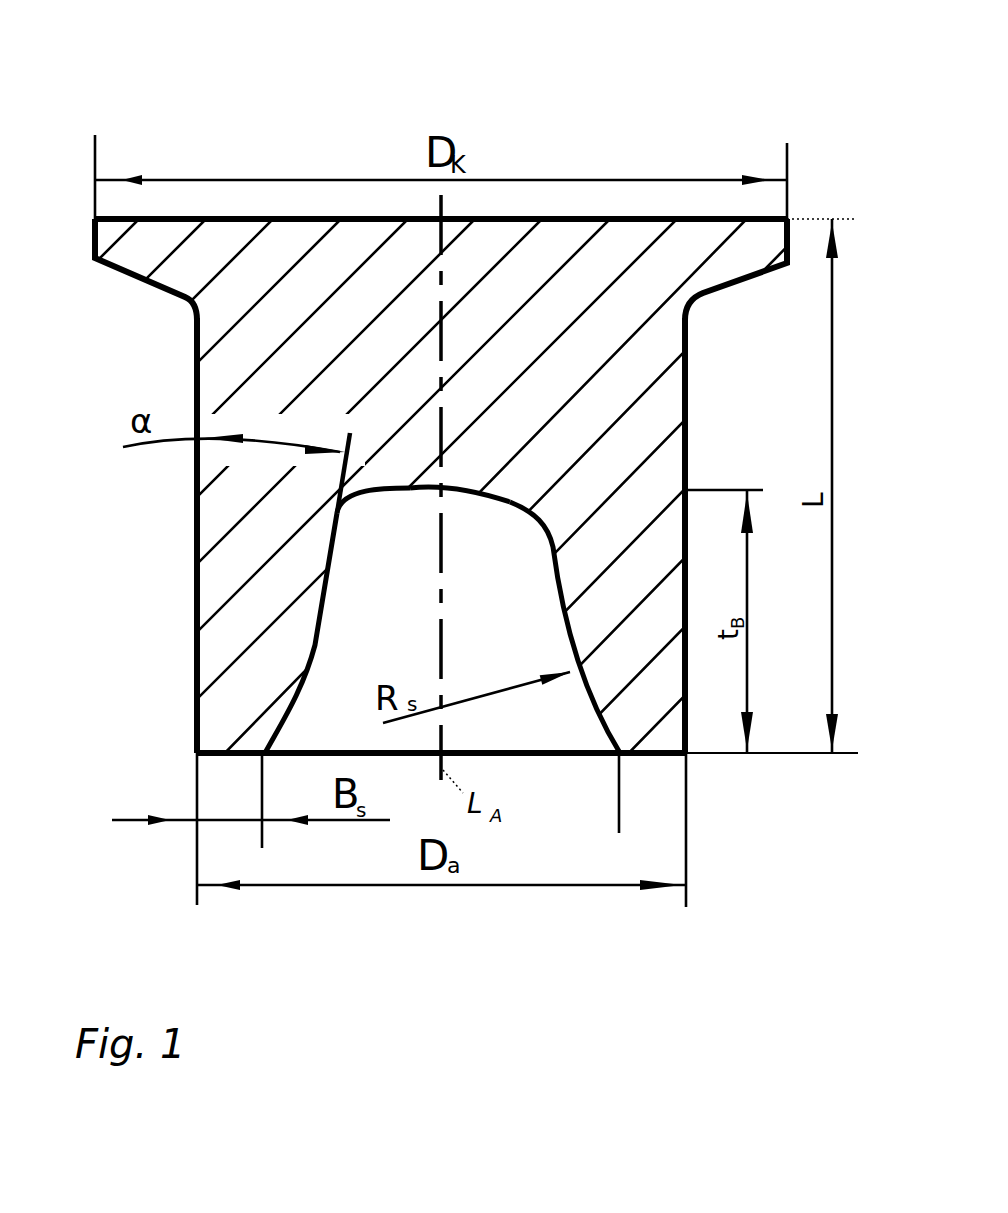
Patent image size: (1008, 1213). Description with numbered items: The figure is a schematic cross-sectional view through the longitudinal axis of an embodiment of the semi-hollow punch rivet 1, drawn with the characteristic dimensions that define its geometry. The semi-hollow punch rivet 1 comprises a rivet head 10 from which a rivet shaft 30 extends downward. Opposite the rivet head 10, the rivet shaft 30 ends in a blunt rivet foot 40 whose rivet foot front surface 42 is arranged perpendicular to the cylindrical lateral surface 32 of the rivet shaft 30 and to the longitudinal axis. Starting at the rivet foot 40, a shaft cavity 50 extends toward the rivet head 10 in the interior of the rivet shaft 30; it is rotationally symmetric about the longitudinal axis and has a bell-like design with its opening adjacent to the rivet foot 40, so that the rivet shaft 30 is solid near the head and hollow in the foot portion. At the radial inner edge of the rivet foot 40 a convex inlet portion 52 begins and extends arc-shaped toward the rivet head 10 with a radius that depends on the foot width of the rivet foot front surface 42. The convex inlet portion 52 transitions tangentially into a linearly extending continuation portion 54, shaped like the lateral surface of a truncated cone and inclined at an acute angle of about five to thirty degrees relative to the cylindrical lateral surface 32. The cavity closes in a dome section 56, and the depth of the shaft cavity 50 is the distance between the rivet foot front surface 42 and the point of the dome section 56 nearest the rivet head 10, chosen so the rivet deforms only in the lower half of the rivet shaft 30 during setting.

The semi-hollow punch rivet 1 is at (892, 59).
The rivet head 10 is at (235, 238).
The rivet shaft 30 is at (280, 387).
The cylindrical lateral surface 32 is at (195, 577).
The rivet foot 40 is at (658, 762).
The rivet foot front surface 42 is at (240, 755).
The shaft cavity 50 is at (326, 609).
The convex inlet portion 52 is at (587, 707).
The continuation portion 54 is at (322, 622).
The dome section 56 is at (397, 503).